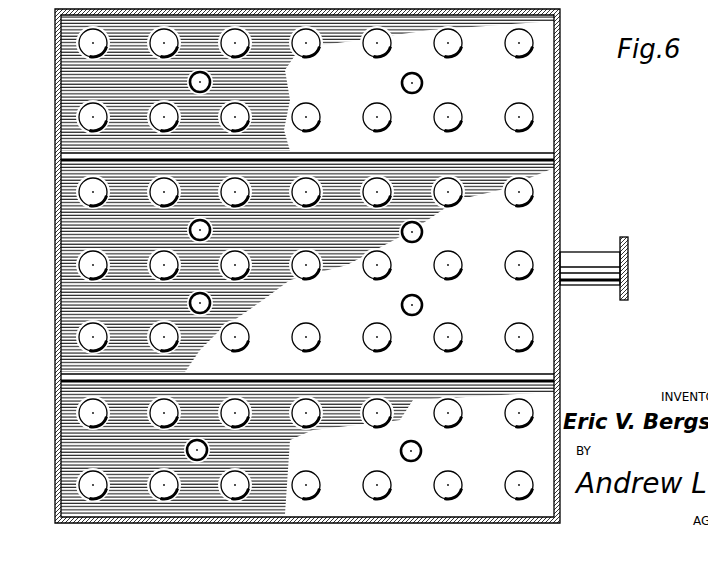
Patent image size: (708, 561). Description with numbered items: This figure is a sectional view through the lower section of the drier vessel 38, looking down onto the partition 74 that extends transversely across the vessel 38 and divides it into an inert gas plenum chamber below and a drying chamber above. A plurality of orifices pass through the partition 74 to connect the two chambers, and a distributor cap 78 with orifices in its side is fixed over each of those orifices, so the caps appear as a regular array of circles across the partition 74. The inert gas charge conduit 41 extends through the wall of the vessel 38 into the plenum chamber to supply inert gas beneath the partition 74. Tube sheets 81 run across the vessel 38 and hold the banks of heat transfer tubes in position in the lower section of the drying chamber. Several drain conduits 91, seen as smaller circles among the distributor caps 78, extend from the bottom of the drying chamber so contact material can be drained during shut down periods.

The vessel 38 is at (56, 70).
The partition 74 is at (62, 178).
The distributor cap 78 is at (370, 55).
The tube sheets 81 is at (490, 142).
The drain conduits 91 is at (424, 83).
The inert gas charge conduit 41 is at (592, 252).